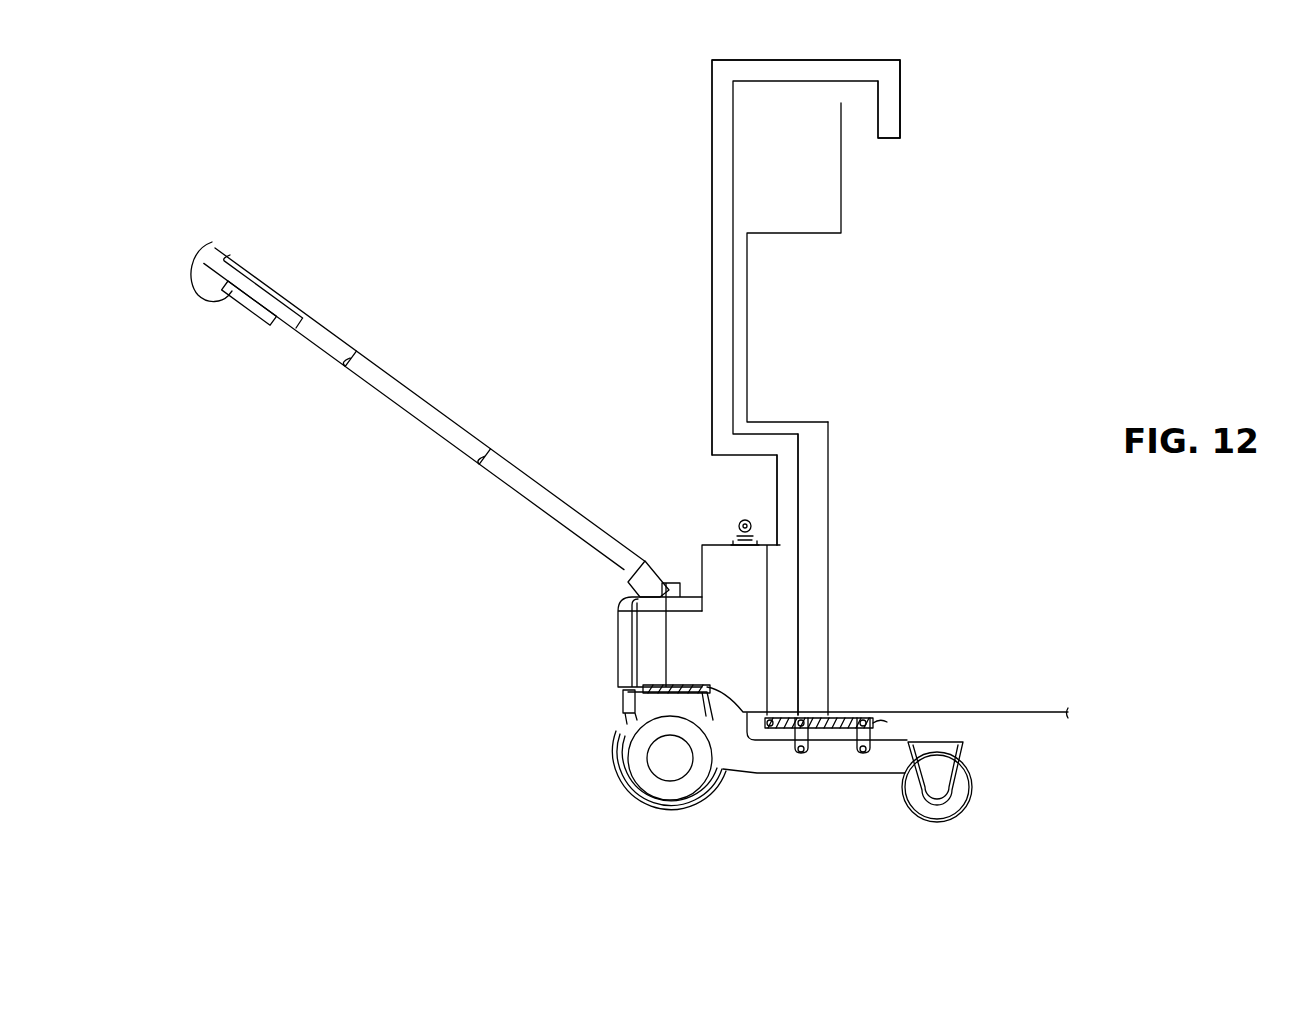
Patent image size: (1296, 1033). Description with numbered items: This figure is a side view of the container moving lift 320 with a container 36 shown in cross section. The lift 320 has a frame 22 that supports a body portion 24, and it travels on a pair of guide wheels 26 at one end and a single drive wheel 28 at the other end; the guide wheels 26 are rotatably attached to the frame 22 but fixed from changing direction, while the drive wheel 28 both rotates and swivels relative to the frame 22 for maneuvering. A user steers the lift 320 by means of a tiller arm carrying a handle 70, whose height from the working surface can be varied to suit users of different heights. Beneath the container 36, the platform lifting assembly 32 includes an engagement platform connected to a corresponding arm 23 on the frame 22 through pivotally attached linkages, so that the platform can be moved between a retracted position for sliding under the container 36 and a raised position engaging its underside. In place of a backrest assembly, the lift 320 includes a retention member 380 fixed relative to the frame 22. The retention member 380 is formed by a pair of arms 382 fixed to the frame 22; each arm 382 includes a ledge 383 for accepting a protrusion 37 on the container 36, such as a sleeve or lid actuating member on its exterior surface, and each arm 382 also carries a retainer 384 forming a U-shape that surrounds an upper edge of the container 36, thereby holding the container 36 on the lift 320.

The frame 22 is at (755, 777).
The arm 23 is at (887, 773).
The body portion 24 is at (700, 650).
The guide wheel 26 is at (963, 805).
The drive wheel 28 is at (623, 780).
The platform lifting assembly 32 is at (905, 732).
The container 36 is at (852, 452).
The protrusion 37 is at (748, 337).
The handle 70 is at (398, 410).
The lift 320 is at (540, 592).
The retention member 380 is at (668, 232).
The arm 382 is at (712, 157).
The ledge 383 is at (772, 432).
The retainer 384 is at (903, 98).